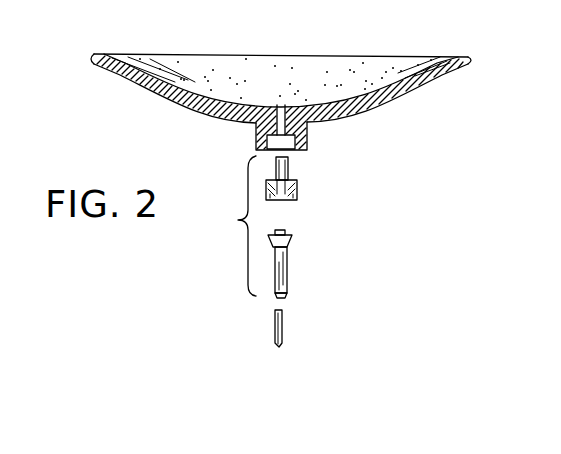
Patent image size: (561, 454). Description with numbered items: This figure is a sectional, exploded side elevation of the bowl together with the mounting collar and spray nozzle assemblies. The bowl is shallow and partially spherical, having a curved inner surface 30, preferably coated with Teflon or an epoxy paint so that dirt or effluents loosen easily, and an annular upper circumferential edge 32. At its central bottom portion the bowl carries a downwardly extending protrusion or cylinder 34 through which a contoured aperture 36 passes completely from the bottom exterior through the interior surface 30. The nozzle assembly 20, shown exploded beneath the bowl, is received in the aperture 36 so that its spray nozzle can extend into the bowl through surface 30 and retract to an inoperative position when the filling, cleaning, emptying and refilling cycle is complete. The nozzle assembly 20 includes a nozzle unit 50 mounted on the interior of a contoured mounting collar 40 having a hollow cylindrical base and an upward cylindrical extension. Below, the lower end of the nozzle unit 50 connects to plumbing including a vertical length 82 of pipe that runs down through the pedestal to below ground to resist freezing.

The nozzle assembly 20 is at (224, 226).
The curved inner surface 30 is at (408, 83).
The annular upper circumferential edge 32 is at (462, 58).
The protrusion or cylinder 34 is at (307, 130).
The contoured aperture 36 is at (279, 108).
The mounting collar 40 is at (292, 169).
The nozzle unit 50 is at (291, 263).
The vertical length of pipe 82 is at (284, 327).